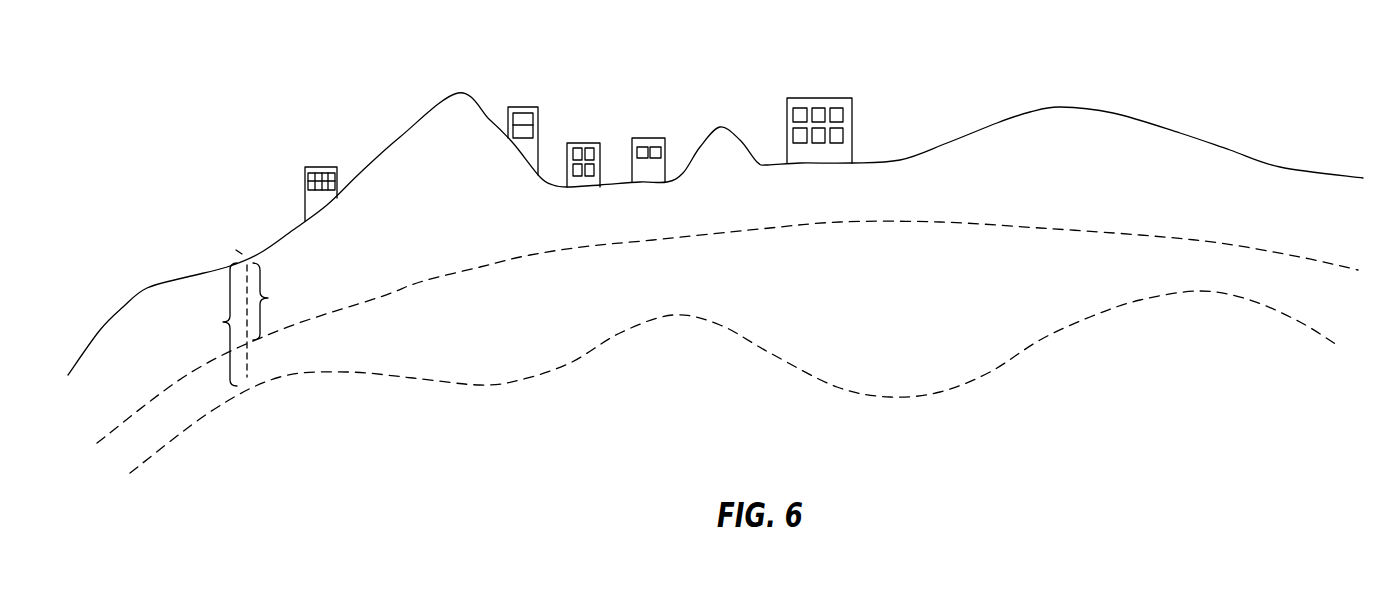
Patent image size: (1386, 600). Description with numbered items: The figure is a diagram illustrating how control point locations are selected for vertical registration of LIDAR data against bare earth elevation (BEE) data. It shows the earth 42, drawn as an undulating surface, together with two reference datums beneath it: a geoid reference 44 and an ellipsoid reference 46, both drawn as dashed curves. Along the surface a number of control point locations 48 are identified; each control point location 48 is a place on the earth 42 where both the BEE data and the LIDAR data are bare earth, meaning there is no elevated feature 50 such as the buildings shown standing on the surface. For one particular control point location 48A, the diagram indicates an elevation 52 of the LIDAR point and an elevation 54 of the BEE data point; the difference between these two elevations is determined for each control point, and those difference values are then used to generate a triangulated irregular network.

The earth 42 is at (440, 223).
The geoid reference 44 is at (362, 375).
The ellipsoid reference 46 is at (530, 255).
The control point locations 48 is at (614, 170).
The control point location 48A is at (236, 244).
The elevated feature 50 is at (318, 167).
The elevation 52 is at (274, 320).
The elevation 54 is at (214, 324).